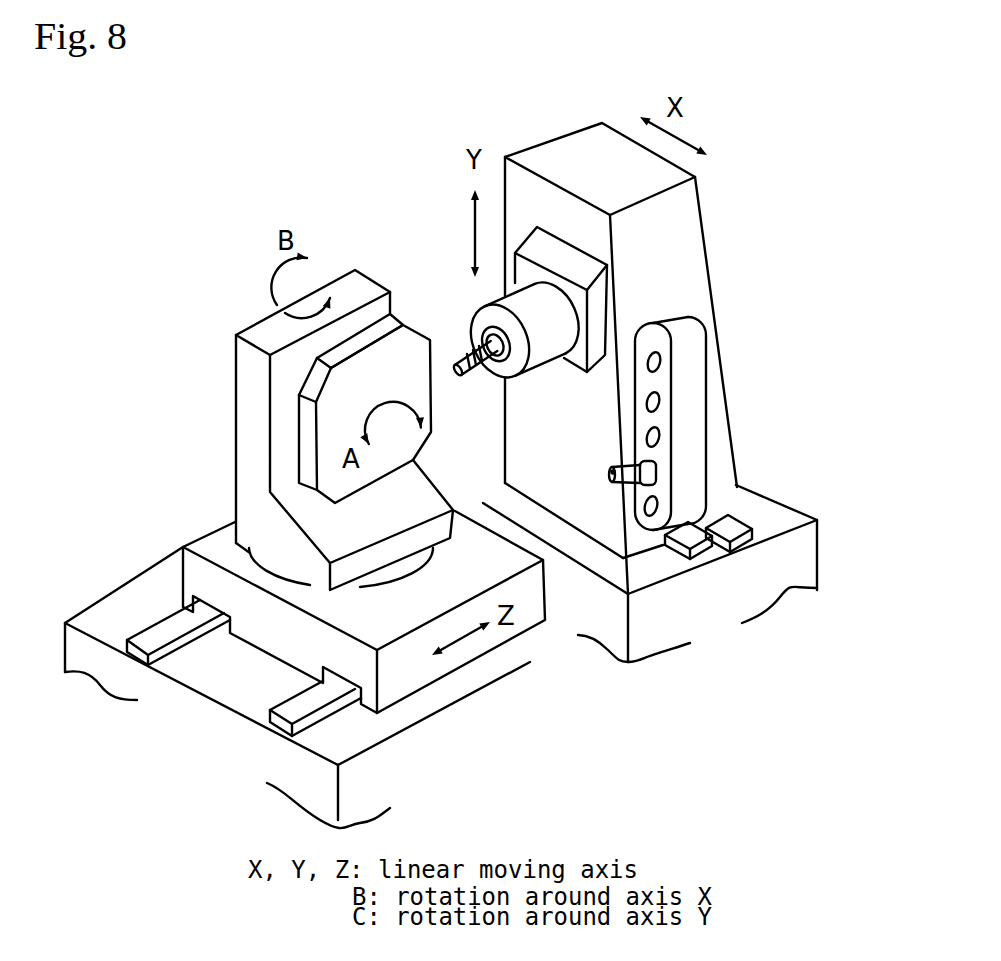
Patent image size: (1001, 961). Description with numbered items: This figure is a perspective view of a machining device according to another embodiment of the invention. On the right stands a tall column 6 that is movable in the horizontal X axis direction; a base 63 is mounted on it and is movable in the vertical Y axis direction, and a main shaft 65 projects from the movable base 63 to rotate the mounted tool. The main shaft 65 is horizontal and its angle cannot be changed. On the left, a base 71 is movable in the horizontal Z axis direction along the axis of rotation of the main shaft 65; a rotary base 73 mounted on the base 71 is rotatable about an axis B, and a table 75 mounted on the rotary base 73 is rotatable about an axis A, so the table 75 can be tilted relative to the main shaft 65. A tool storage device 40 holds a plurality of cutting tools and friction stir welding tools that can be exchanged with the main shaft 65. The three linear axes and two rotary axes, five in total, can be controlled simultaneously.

The column 6 is at (675, 243).
The tool storage device 40 is at (688, 386).
The base 63 is at (533, 246).
The main shaft 65 is at (476, 322).
The base 71 is at (420, 677).
The rotary base 73 is at (252, 415).
The table 75 is at (307, 458).